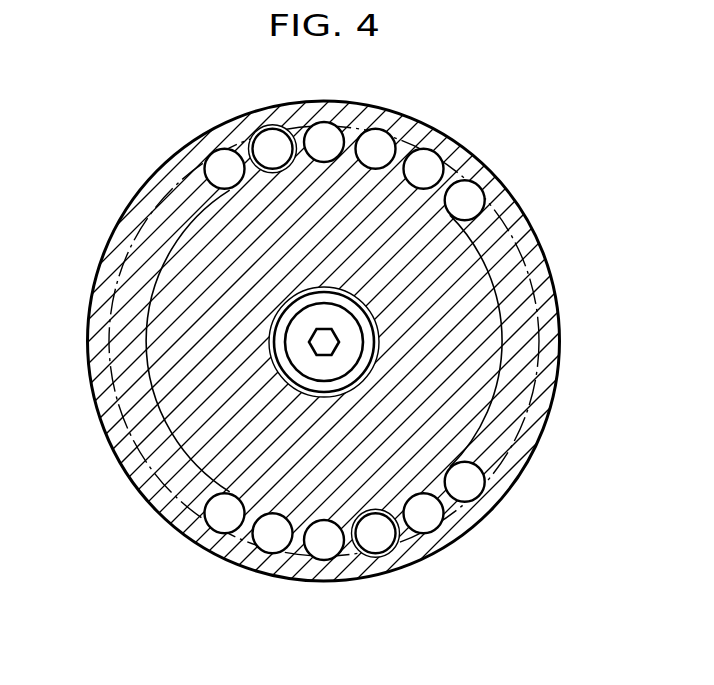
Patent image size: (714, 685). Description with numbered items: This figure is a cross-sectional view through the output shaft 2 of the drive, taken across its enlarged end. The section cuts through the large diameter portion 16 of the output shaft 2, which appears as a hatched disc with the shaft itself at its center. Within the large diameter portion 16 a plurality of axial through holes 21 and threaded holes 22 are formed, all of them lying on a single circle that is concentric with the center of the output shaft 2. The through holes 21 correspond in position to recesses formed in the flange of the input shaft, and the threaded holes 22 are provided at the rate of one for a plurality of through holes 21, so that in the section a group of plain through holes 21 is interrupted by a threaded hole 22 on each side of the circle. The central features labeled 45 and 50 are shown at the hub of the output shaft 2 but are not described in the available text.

The output shaft 2 is at (292, 413).
The large diameter portion 16 is at (517, 208).
The through holes 21 is at (458, 190).
The threaded holes 22 is at (265, 143).
The shaft 45 is at (378, 353).
The bolt 50 is at (293, 381).